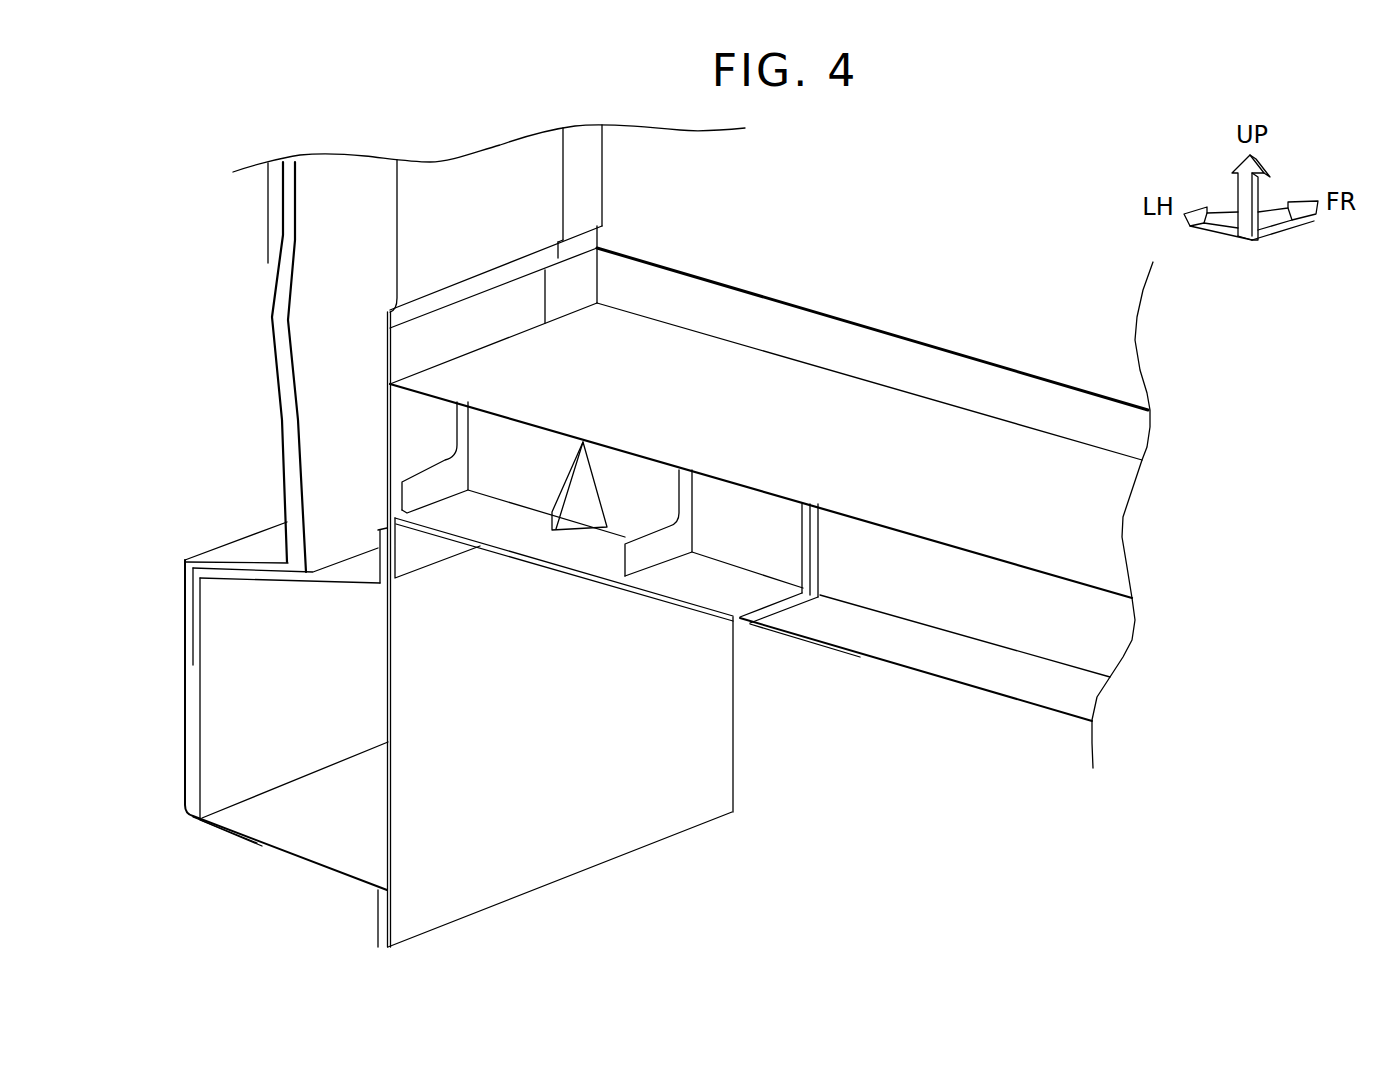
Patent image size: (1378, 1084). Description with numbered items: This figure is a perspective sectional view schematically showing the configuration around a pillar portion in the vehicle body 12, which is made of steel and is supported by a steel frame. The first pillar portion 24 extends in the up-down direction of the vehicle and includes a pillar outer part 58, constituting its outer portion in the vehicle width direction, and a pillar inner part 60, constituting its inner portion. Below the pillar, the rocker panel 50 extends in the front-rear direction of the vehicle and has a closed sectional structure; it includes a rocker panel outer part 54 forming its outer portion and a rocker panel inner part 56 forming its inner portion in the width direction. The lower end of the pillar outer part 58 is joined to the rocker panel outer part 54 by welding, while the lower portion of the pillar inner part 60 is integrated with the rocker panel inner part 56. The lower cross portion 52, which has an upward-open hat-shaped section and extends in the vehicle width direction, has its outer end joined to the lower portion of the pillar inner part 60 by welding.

The vehicle body 12 is at (200, 353).
The first pillar portion 24 is at (564, 112).
The rocker panel 50 is at (459, 629).
The lower cross portion 52 is at (940, 660).
The rocker panel outer part 54 is at (227, 653).
The rocker panel inner part 56 is at (430, 673).
The pillar outer part 58 is at (317, 208).
The pillar inner part 60 is at (507, 211).